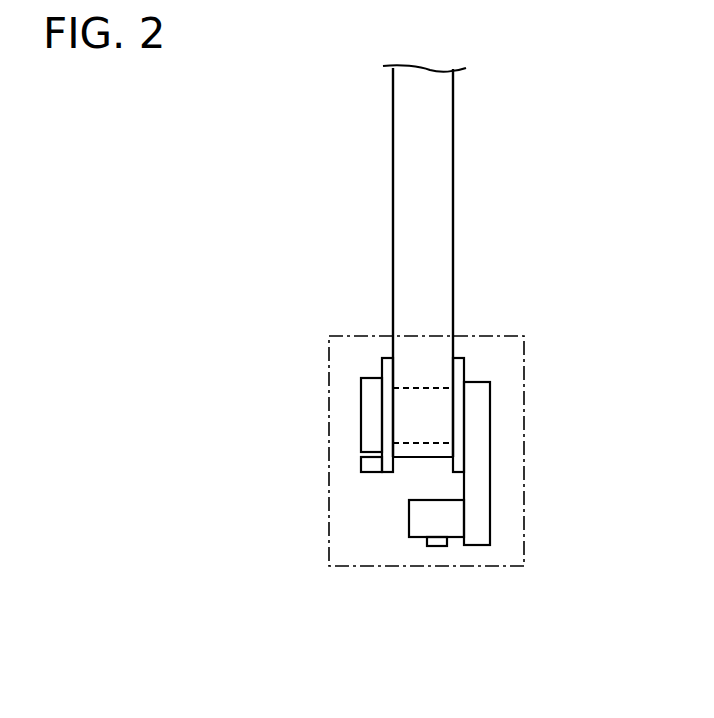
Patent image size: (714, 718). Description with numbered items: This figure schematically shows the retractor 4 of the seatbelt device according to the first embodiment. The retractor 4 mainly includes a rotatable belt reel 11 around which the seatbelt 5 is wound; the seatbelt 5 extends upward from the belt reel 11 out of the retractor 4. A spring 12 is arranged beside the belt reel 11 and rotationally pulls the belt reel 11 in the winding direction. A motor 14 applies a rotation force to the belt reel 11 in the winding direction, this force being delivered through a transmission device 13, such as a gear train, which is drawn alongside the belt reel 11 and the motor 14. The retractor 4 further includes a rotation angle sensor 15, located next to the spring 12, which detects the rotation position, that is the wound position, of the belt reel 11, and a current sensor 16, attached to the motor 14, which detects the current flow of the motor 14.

The retractor 4 is at (526, 405).
The seatbelt 5 is at (453, 158).
The belt reel 11 is at (464, 368).
The spring 12 is at (368, 405).
The transmission device 13 is at (485, 475).
The motor 14 is at (412, 511).
The rotation angle sensor 15 is at (365, 464).
The current sensor 16 is at (441, 546).